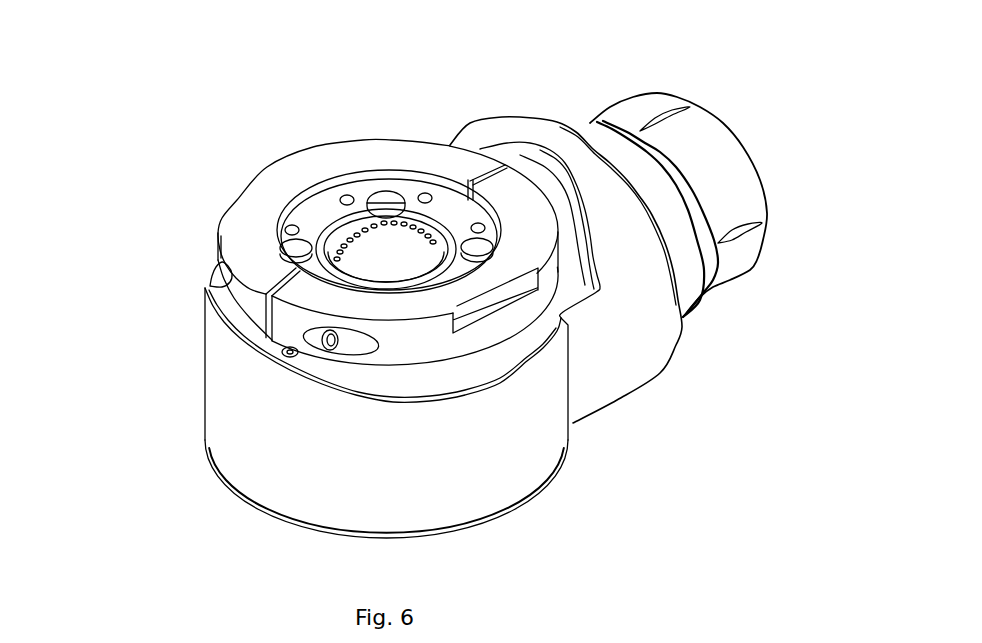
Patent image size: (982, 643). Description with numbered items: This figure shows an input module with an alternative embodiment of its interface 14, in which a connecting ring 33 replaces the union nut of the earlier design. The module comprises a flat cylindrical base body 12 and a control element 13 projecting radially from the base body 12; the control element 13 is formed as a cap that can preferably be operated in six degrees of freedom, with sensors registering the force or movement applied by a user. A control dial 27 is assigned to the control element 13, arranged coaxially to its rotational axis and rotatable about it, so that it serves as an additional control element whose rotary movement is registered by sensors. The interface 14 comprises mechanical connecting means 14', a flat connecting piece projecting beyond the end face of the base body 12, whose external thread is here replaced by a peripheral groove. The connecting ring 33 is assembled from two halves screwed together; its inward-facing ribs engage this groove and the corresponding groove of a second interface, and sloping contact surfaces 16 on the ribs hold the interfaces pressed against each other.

The base body 12 is at (220, 432).
The control element 13 is at (697, 143).
The interface 14 is at (373, 155).
The mechanical connecting means 14' is at (339, 184).
The sloping contact surfaces 16 is at (438, 175).
The control dial 27 is at (603, 147).
The connecting ring 33 is at (242, 222).